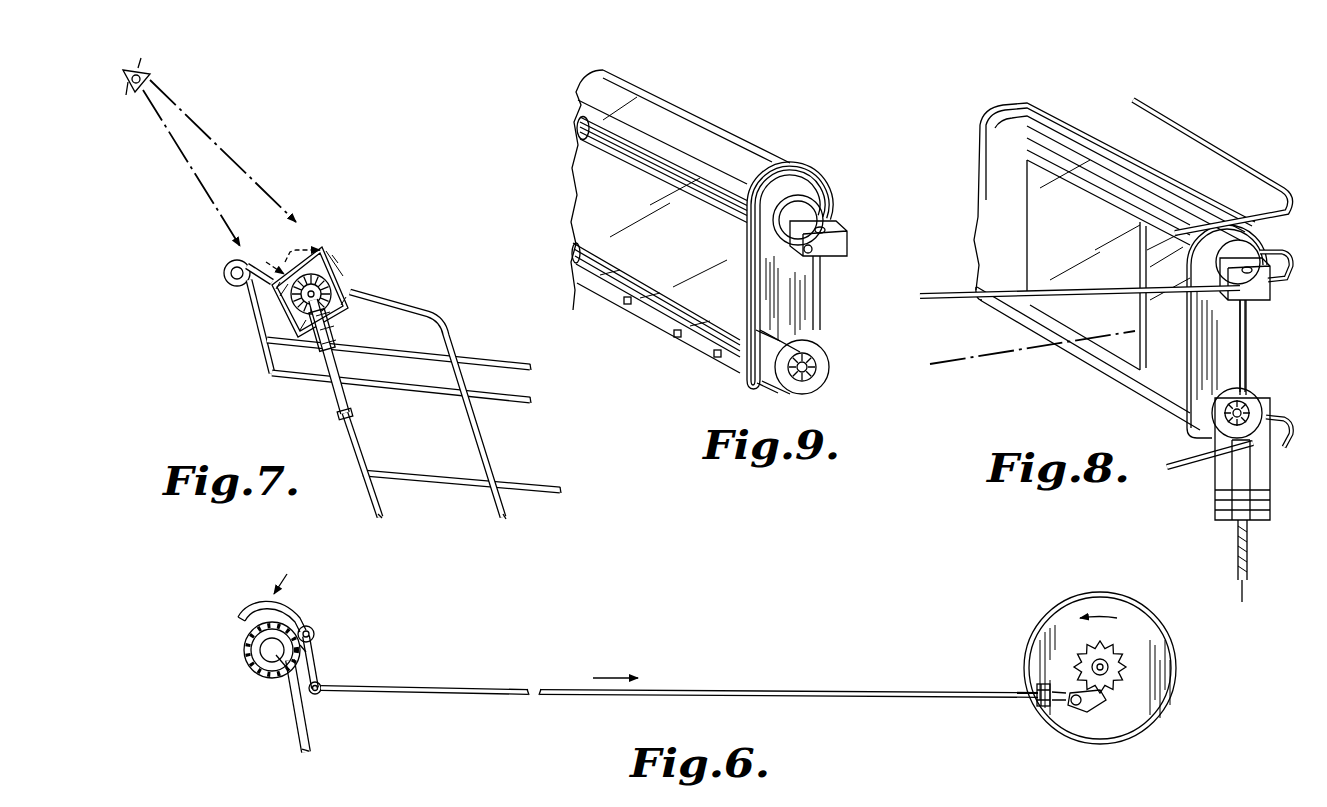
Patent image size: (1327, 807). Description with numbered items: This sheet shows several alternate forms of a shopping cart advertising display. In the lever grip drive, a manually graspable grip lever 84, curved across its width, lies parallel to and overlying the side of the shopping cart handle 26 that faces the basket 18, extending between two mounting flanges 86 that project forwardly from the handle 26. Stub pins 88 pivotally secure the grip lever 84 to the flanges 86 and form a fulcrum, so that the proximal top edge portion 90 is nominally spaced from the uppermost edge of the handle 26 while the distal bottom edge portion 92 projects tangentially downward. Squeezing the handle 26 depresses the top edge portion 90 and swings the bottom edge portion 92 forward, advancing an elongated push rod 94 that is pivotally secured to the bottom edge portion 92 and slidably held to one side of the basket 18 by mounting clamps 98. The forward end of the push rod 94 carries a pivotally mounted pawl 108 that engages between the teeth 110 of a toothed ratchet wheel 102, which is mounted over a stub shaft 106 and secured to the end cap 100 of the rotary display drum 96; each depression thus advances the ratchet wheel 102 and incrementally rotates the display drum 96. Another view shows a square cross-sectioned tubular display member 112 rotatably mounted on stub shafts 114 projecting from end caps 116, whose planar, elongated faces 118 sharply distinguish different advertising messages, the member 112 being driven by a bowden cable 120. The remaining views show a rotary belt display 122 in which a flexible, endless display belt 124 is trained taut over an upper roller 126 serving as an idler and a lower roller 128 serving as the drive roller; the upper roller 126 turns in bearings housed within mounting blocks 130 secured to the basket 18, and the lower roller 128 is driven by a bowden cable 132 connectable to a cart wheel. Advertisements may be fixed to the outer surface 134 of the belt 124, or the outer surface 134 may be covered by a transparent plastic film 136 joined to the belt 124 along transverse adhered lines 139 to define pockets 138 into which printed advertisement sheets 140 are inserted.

In FIG. 8, the cart basket 18 is at (1262, 293).
In FIG. 6, the cart basket 18 is at (293, 709).
In FIG. 6, the shopping cart handle 26 is at (244, 648).
In FIG. 6, the grip lever 84 is at (300, 613).
In FIG. 6, the mounting flanges 86 is at (318, 641).
In FIG. 6, the stub pins 88 is at (316, 633).
In FIG. 6, the top edge portion 90 is at (243, 618).
In FIG. 6, the bottom edge portion 92 is at (320, 697).
In FIG. 6, the push rod 94 is at (680, 692).
In FIG. 6, the display drum 96 is at (1117, 593).
In FIG. 6, the mounting clamps 98 is at (1040, 683).
In FIG. 6, the end cap 100 is at (1150, 640).
In FIG. 6, the ratchet wheel 102 is at (1112, 667).
In FIG. 6, the stub shaft 106 is at (1137, 673).
In FIG. 6, the pawl 108 is at (1107, 697).
In FIG. 6, the teeth 110 is at (1083, 643).
In FIG. 7, the tubular display member 112 is at (330, 253).
In FIG. 7, the stub shafts 114 is at (293, 297).
In FIG. 7, the end caps 116 is at (347, 293).
In FIG. 7, the planar faces 118 is at (292, 255).
In FIG. 7, the bowden cable 120 is at (343, 430).
In FIG. 9, the rotary belt display 122 is at (745, 133).
In FIG. 8, the rotary belt display 122 is at (1058, 117).
In FIG. 9, the display belt 124 is at (760, 374).
In FIG. 8, the display belt 124 is at (988, 180).
In FIG. 9, the upper roller 126 is at (803, 188).
In FIG. 8, the upper roller 126 is at (1238, 230).
In FIG. 9, the lower roller 128 is at (790, 323).
In FIG. 8, the lower roller 128 is at (1220, 372).
In FIG. 9, the mounting blocks 130 is at (833, 228).
In FIG. 8, the mounting blocks 130 is at (1255, 287).
In FIG. 8, the bowden cable 132 is at (1250, 556).
In FIG. 9, the outer surface 134 is at (757, 350).
In FIG. 8, the outer surface 134 is at (1167, 380).
In FIG. 9, the plastic film 136 is at (578, 128).
In FIG. 9, the pockets 138 is at (622, 92).
In FIG. 9, the adhered lines 139 is at (578, 103).
In FIG. 9, the printed advertisement sheets 140 is at (755, 192).